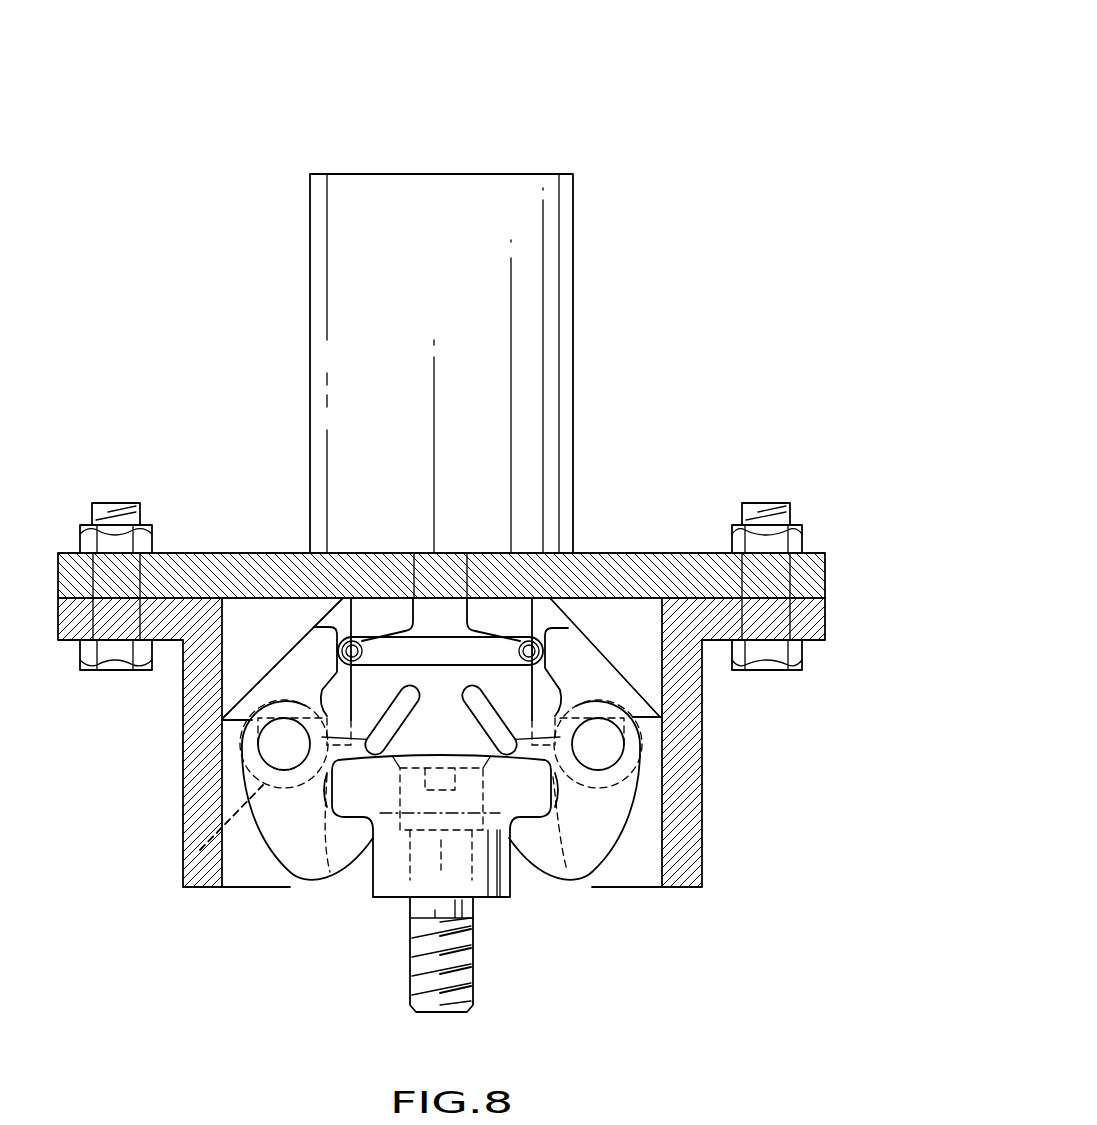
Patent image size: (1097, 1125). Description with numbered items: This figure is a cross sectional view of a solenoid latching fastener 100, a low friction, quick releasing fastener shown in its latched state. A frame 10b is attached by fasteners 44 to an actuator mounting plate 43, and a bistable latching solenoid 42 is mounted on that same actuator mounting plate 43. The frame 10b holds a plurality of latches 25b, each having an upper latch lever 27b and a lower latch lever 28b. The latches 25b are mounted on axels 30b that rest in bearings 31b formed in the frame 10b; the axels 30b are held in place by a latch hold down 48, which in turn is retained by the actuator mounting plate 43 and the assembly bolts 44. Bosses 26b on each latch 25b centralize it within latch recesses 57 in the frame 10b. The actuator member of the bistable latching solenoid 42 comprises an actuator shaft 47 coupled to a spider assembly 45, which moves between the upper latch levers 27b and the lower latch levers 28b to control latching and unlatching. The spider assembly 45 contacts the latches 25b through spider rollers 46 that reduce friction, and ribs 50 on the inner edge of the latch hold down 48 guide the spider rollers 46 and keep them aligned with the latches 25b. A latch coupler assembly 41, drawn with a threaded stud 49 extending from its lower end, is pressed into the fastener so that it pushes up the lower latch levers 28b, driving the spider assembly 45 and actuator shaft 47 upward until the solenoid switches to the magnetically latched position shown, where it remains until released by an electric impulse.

The solenoid latching fastener 100 is at (635, 105).
The bistable latching solenoid 42 is at (308, 363).
The actuator mounting plate 43 is at (215, 552).
The fasteners 44 is at (100, 505).
The latch hold down 48 is at (638, 597).
The frame 10b is at (702, 738).
The upper latch lever 27b is at (317, 627).
The ribs 50 is at (340, 692).
The spider rollers 46 is at (535, 643).
The actuator shaft 47 is at (470, 608).
The spider assembly 45 is at (440, 665).
The lower latch lever 28b is at (472, 722).
The axels 30b is at (270, 742).
The bearings 31b is at (283, 770).
The bosses 26b is at (200, 850).
The latches 25b is at (275, 860).
The latch recesses 57 is at (662, 878).
The latch coupler assembly 41 is at (373, 890).
The threaded bolt 49 is at (475, 910).